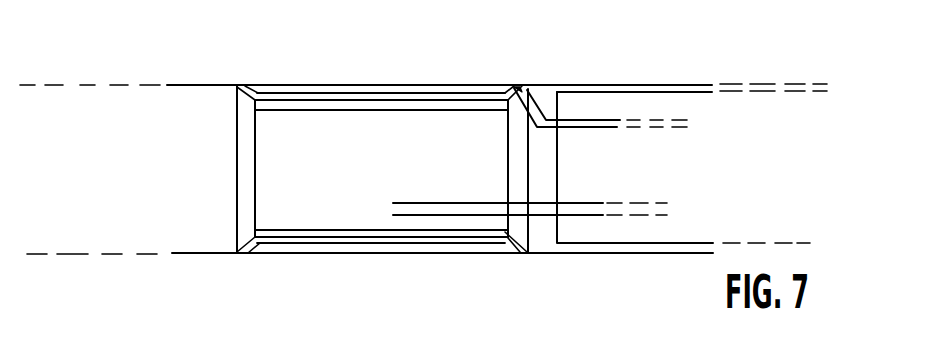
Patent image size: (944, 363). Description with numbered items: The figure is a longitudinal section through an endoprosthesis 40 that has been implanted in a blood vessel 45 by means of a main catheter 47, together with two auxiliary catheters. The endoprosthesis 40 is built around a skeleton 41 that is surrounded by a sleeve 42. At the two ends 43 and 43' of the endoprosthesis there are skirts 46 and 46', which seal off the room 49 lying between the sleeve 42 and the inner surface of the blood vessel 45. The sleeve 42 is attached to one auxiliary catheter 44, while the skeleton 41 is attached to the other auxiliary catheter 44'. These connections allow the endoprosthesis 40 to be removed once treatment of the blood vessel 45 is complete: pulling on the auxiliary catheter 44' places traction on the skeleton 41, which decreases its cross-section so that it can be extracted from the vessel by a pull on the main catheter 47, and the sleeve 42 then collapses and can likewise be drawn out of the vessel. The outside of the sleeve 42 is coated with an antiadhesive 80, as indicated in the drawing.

The endoprosthesis 40 is at (440, 89).
The skeleton 41 is at (311, 112).
The sleeve 42 is at (389, 91).
The end of the endoprosthesis 43 is at (566, 171).
The end of the endoprosthesis 43' is at (202, 169).
The auxiliary catheter 44 is at (600, 74).
The auxiliary catheter 44' is at (683, 200).
The blood vessel 45 is at (308, 85).
The skirt 46 is at (515, 197).
The skirt 46' is at (251, 137).
The main catheter 47 is at (700, 92).
The room between the sleeve and the inner surface of the vessel 49 is at (305, 254).
The antiadhesive 80 is at (490, 89).